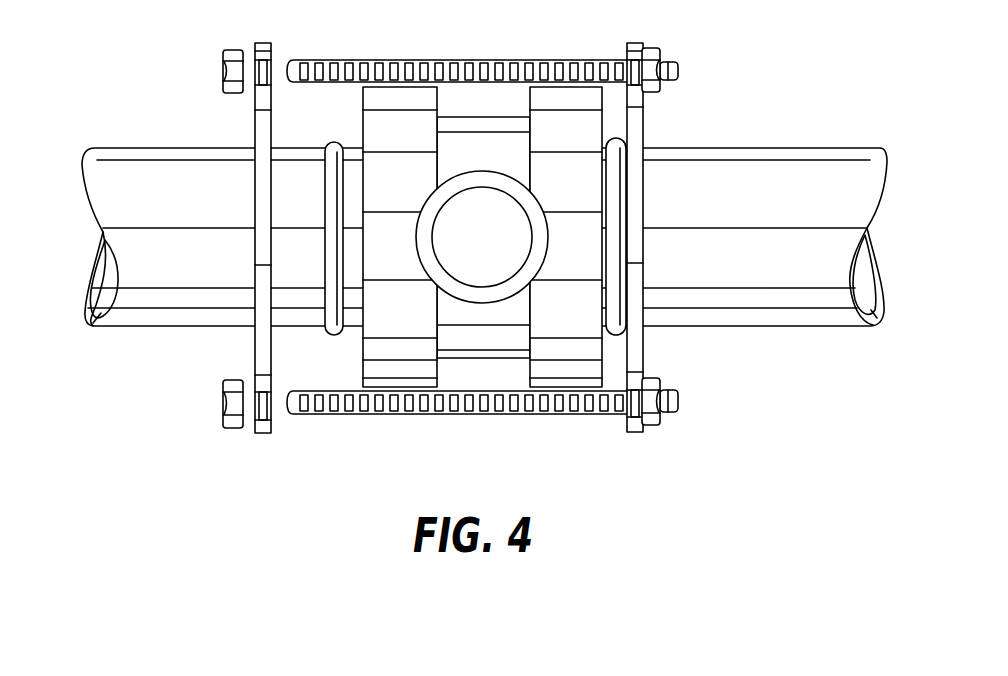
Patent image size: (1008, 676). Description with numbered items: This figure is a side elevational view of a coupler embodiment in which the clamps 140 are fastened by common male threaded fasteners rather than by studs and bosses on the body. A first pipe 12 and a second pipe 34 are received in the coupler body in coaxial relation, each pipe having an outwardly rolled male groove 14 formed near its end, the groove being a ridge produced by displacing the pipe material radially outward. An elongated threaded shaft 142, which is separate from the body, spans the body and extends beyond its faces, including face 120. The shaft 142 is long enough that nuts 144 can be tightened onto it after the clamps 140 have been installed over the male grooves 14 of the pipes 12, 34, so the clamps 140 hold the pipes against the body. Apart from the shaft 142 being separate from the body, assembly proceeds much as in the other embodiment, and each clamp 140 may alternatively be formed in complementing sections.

The first pipe 12 is at (127, 337).
The male groove 14 is at (341, 138).
The second pipe 34 is at (777, 214).
The first face 120 is at (367, 356).
The clamp 140 is at (250, 127).
The elongated threaded shaft 142 is at (388, 58).
The nut 144 is at (212, 76).